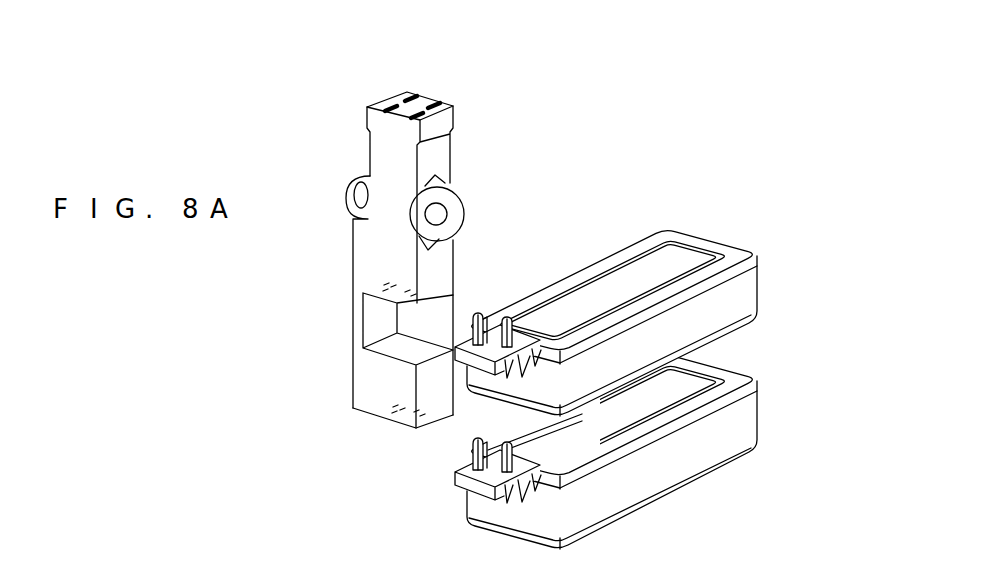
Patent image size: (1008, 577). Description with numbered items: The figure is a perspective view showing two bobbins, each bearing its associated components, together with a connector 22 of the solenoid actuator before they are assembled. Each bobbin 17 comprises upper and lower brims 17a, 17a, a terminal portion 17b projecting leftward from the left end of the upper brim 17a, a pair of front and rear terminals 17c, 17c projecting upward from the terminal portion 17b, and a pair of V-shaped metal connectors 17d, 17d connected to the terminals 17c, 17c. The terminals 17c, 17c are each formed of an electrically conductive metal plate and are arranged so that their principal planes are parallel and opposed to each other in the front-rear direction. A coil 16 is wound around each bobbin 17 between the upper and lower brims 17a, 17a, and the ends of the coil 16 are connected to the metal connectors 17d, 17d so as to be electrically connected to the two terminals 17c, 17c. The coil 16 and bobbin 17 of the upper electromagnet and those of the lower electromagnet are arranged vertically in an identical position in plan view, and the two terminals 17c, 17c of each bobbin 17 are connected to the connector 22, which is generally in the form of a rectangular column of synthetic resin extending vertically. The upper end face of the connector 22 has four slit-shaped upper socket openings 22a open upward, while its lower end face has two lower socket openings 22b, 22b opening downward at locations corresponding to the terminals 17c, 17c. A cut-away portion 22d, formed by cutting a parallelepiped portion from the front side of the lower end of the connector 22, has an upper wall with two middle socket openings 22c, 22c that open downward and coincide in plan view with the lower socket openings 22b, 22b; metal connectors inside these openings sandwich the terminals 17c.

The coil 16 is at (759, 303).
The bobbin 17 is at (559, 357).
The brim 17a is at (664, 234).
The terminal portion 17b is at (470, 366).
The terminal 17c is at (484, 316).
The V-shaped metal connector 17d is at (512, 375).
The connector 22 is at (388, 238).
The upper socket opening 22a is at (391, 106).
The lower socket opening 22b is at (402, 436).
The middle socket opening 22c is at (398, 313).
The cut-away portion 22d is at (408, 347).